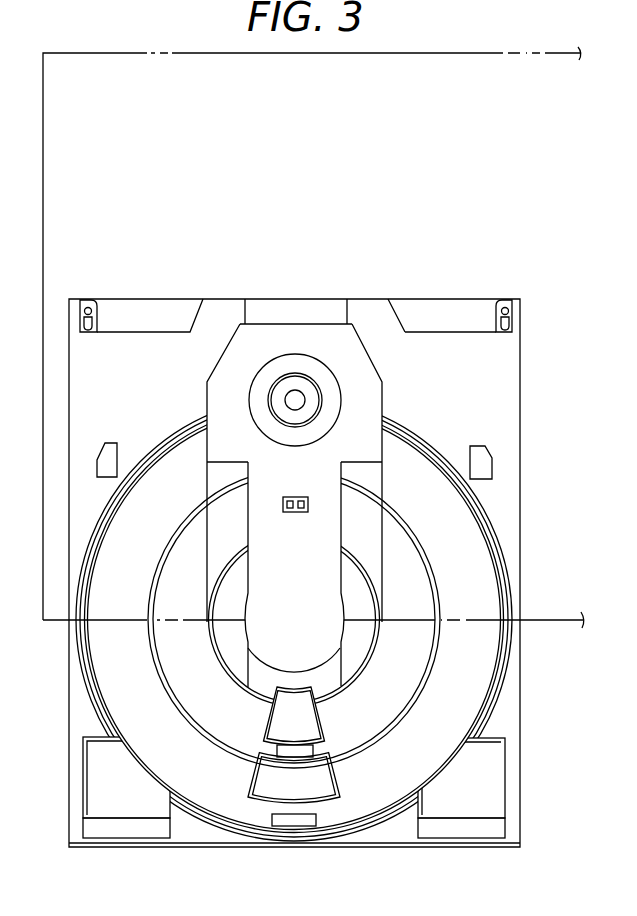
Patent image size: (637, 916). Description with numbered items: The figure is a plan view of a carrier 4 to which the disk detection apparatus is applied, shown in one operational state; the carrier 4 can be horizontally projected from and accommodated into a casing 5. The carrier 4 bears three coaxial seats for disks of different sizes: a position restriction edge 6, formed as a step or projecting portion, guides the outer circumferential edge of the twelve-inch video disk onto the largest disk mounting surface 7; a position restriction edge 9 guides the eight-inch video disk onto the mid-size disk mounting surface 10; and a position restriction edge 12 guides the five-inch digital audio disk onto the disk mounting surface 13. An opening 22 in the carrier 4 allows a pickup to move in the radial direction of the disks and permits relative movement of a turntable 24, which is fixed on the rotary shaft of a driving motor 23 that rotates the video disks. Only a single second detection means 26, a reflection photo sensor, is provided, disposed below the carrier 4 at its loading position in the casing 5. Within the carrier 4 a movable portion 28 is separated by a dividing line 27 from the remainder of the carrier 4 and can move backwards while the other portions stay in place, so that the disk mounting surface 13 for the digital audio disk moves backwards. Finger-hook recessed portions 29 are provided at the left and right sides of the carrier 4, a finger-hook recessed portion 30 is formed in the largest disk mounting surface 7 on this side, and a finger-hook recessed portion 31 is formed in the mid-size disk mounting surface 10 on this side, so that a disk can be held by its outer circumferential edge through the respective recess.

The carrier 4 is at (505, 413).
The casing 5 is at (511, 46).
The position restriction edge 6 is at (510, 540).
The disk mounting surface 7 is at (110, 693).
The position restriction edge 9 is at (403, 520).
The disk mounting surface 10 is at (178, 657).
The position restriction edge 12 is at (368, 572).
The disk mounting surface 13 is at (227, 595).
The opening 22 is at (307, 478).
The driving motor 23 is at (313, 354).
The turntable 24 is at (281, 376).
The detection means 26 is at (297, 513).
The dividing line 27 is at (383, 482).
The movable portion 28 is at (223, 460).
The finger-hook recessed portions 29 is at (130, 812).
The finger-hook recessed portion 30 is at (257, 785).
The finger-hook recessed portion 31 is at (272, 720).